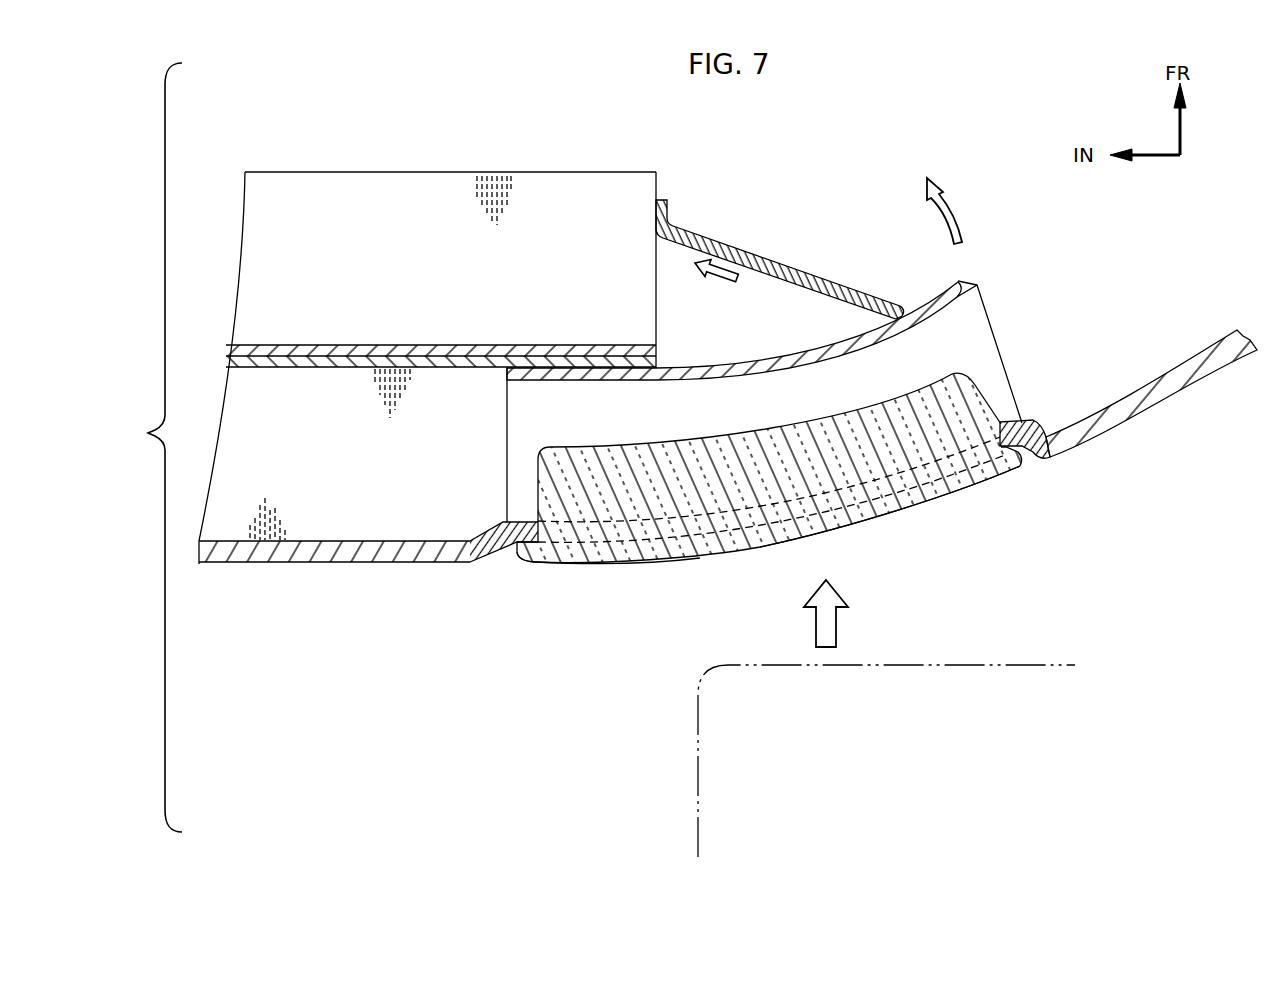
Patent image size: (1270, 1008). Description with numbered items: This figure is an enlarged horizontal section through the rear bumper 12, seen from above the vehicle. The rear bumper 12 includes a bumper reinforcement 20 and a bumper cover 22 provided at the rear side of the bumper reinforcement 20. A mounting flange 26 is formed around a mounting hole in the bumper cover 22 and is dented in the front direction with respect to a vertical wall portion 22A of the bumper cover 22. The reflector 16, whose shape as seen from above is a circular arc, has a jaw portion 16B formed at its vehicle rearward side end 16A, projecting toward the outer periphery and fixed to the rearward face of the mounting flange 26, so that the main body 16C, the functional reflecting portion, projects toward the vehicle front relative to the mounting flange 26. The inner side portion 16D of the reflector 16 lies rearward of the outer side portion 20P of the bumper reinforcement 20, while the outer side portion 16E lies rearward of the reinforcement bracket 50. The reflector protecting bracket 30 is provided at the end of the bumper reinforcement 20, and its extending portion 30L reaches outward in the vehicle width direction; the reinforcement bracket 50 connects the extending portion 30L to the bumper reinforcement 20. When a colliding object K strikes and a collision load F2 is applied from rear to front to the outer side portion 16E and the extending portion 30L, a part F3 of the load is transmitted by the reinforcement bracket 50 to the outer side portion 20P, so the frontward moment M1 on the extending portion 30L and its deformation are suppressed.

The rear bumper 12 is at (400, 97).
The bumper cover 22 is at (334, 358).
The vertical wall portion 22A is at (334, 580).
The bumper reinforcement 20 is at (441, 310).
The outer side portion 20P is at (597, 162).
The reinforcement bracket 50 is at (830, 268).
The reflector protecting bracket 30 is at (778, 352).
The extending portion 30L is at (790, 345).
The mounting flange 26 is at (510, 522).
The reflector 16 is at (776, 510).
The vehicle rearward side end 16A is at (697, 560).
The jaw portion 16B is at (523, 565).
The main body 16C is at (748, 433).
The inner side portion 16D is at (585, 573).
The outer side portion 16E is at (905, 521).
The part of the collision load F3 is at (720, 280).
The collision load F2 is at (838, 622).
The moment M1 is at (957, 208).
The colliding object K is at (686, 703).